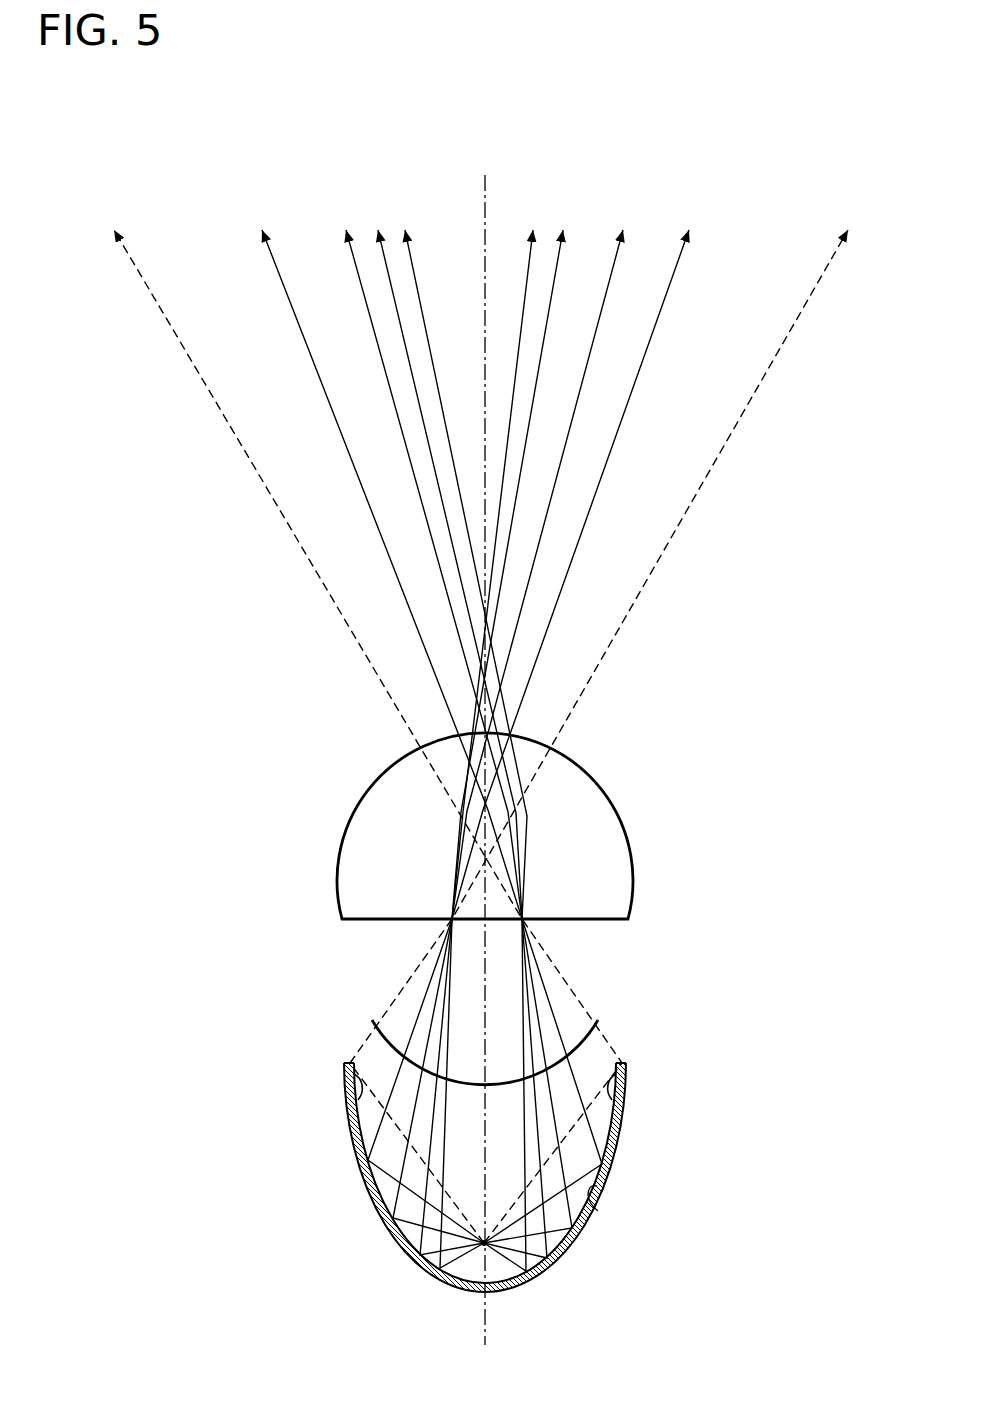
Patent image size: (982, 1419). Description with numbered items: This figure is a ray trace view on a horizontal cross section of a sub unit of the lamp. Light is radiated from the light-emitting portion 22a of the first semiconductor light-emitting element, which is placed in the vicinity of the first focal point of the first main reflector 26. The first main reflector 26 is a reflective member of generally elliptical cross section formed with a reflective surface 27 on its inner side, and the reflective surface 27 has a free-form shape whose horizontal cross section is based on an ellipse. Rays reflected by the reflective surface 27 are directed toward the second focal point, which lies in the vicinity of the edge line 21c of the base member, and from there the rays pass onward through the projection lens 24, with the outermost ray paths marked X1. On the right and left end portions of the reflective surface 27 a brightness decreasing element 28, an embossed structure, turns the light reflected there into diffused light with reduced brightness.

The projection lens 24 is at (578, 883).
The marginal light ray X1 is at (403, 993).
The edge line 21c is at (593, 1030).
The first main reflector 26 is at (574, 1250).
The reflective surface 27 is at (597, 1186).
The brightness decreasing element 28 is at (622, 1109).
The light-emitting portion 22a is at (485, 1245).